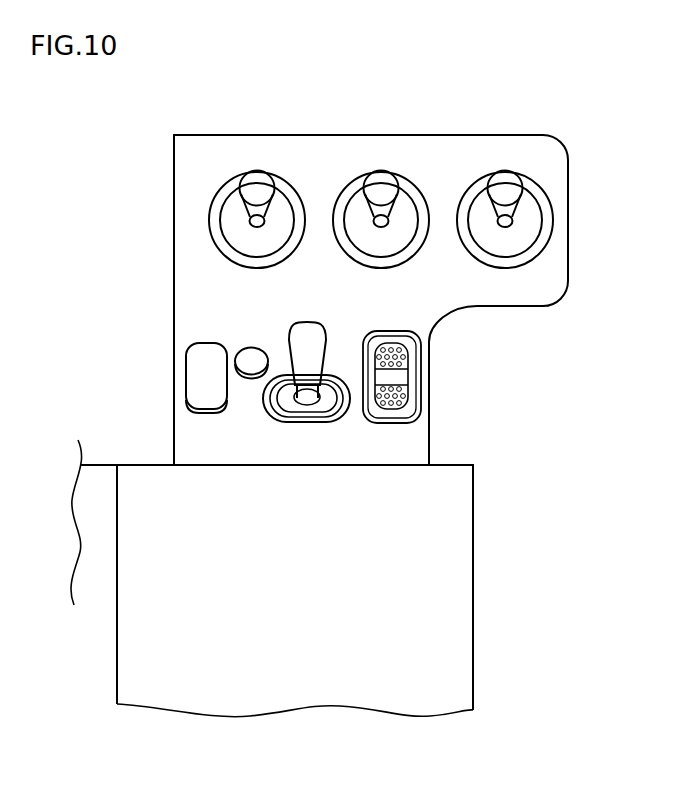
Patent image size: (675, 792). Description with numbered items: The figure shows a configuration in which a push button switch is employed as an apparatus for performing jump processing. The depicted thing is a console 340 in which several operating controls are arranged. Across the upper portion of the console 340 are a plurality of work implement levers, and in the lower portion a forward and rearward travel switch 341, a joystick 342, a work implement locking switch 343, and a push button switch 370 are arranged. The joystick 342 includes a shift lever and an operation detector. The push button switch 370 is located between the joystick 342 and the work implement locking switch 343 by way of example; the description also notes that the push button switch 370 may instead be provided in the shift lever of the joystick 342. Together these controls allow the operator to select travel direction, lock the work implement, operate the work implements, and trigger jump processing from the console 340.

The console 340 is at (558, 122).
The forward and rearward travel switch 341 is at (400, 375).
The joystick 342 is at (311, 364).
The work implement locking switch 343 is at (209, 392).
The push button switch 370 is at (251, 365).